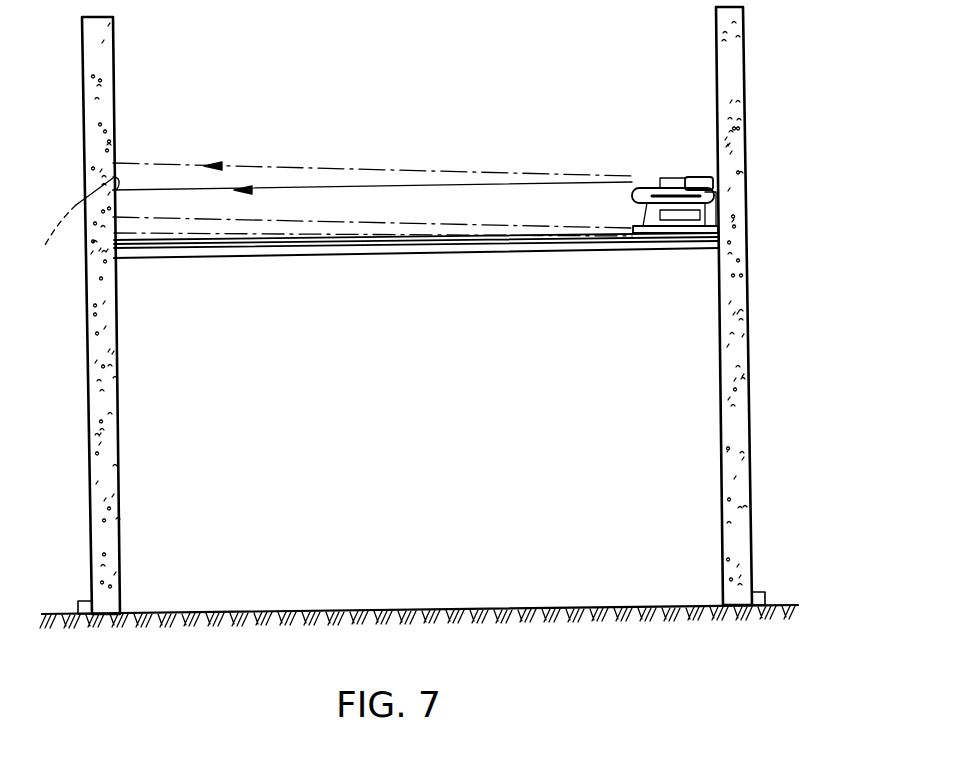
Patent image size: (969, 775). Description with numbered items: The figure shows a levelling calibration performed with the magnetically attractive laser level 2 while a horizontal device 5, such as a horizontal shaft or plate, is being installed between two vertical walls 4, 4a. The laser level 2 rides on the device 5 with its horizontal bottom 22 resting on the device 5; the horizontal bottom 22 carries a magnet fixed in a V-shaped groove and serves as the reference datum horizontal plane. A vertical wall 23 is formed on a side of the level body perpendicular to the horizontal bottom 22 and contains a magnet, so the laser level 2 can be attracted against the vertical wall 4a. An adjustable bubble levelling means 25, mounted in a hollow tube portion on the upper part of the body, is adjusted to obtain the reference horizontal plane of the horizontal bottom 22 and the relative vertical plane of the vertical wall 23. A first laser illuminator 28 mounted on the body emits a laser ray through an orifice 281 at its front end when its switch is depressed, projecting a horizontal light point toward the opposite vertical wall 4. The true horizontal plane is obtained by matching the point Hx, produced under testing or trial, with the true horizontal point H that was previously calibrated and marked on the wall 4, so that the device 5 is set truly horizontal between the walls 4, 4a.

The laser level 2 is at (707, 179).
The vertical wall 4 is at (118, 452).
The vertical wall 4a is at (749, 421).
The horizontal device 5 is at (330, 228).
The horizontal bottom 22 is at (678, 233).
The vertical wall 23 is at (722, 194).
The adjustable bubble levelling means 25 is at (670, 188).
The first laser illuminator 28 is at (713, 178).
The orifice 281 is at (680, 178).
The true horizontal point H is at (113, 163).
The test point Hx is at (74, 230).